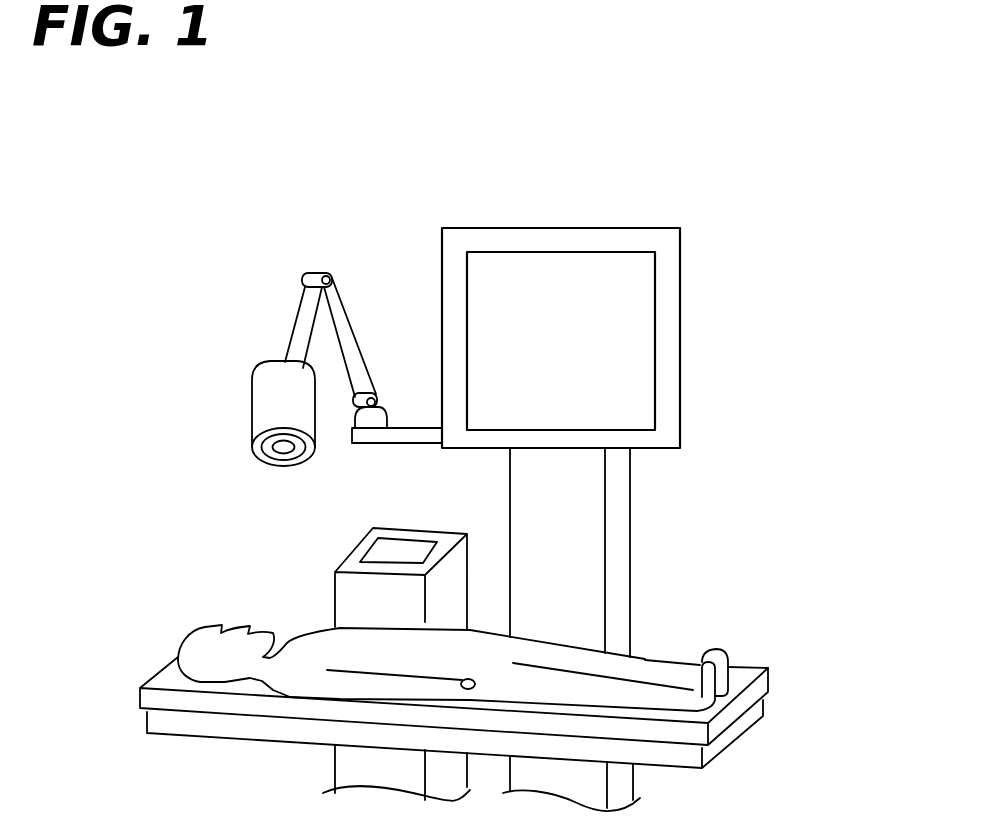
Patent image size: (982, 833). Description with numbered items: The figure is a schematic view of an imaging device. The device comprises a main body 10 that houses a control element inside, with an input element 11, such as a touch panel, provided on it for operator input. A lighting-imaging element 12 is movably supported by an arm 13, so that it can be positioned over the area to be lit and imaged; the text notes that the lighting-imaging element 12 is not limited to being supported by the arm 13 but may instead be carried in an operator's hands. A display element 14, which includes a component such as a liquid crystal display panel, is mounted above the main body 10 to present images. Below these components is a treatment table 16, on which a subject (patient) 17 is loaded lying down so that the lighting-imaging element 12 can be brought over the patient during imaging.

The main body 10 is at (347, 551).
The input element 11 is at (405, 547).
The lighting-imaging element 12 is at (255, 415).
The arm 13 is at (347, 327).
The display element 14 is at (605, 260).
The treatment table 16 is at (742, 673).
The subject (patient) 17 is at (183, 638).